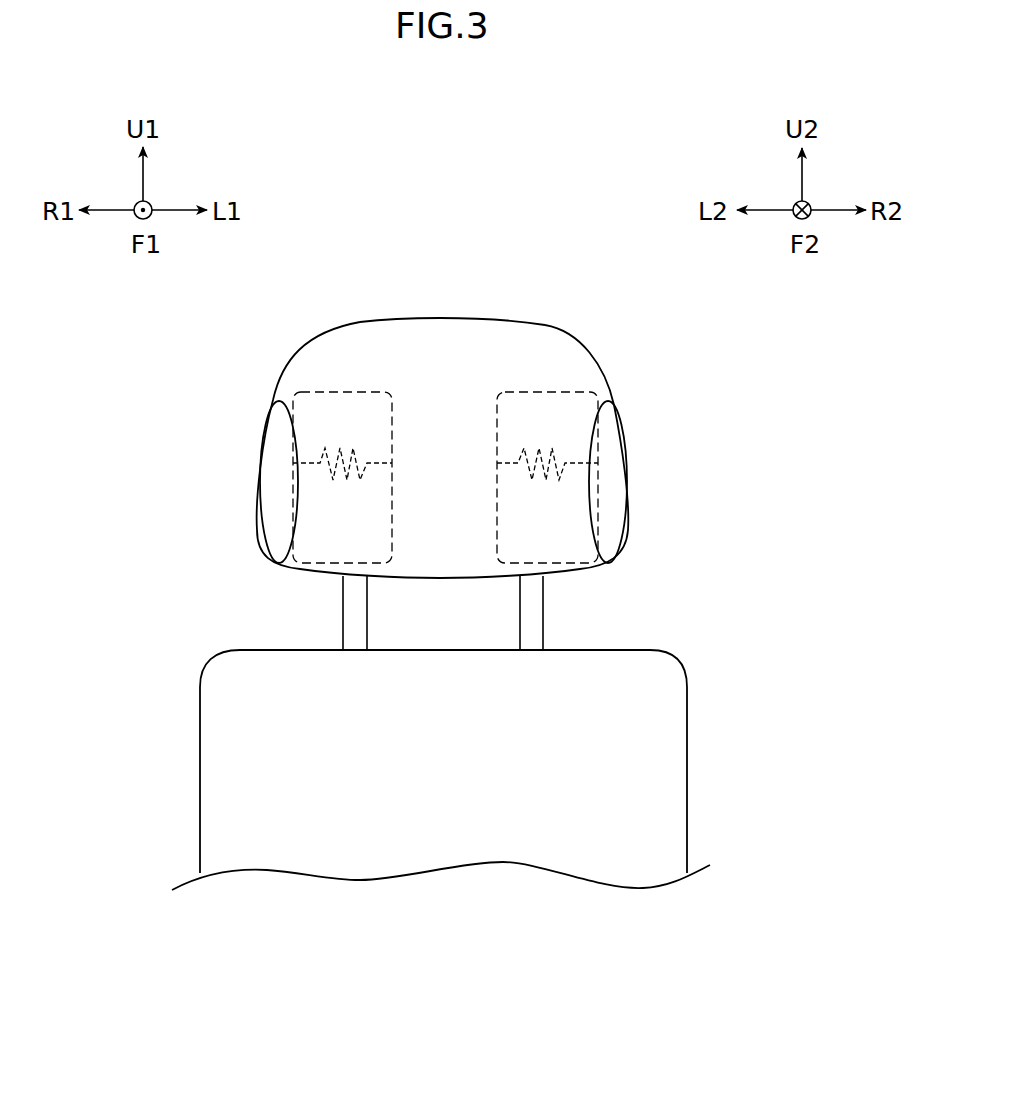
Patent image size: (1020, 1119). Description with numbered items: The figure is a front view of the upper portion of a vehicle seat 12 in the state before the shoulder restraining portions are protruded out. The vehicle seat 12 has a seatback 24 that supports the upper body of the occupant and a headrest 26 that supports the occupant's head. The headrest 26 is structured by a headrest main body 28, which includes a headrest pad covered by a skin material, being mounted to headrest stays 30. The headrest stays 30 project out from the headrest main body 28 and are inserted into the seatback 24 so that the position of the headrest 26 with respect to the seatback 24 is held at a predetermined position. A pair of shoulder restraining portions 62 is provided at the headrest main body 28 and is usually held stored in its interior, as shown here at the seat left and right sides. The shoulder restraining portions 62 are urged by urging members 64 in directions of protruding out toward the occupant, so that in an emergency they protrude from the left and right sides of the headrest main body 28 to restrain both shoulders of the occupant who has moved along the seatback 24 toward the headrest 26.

The vehicle seat 12 is at (187, 623).
The seatback 24 is at (687, 768).
The headrest 26 is at (560, 325).
The headrest main body 28 is at (445, 318).
The headrest stays 30 is at (543, 610).
The shoulder restraining portions 62 is at (277, 477).
The urging members 64 is at (340, 452).